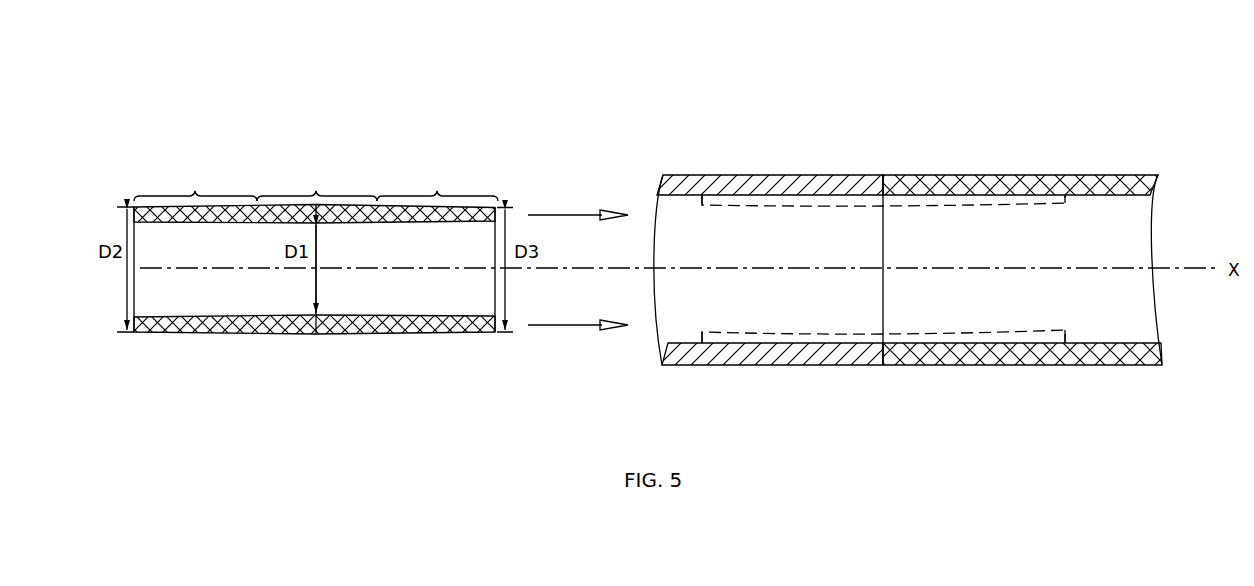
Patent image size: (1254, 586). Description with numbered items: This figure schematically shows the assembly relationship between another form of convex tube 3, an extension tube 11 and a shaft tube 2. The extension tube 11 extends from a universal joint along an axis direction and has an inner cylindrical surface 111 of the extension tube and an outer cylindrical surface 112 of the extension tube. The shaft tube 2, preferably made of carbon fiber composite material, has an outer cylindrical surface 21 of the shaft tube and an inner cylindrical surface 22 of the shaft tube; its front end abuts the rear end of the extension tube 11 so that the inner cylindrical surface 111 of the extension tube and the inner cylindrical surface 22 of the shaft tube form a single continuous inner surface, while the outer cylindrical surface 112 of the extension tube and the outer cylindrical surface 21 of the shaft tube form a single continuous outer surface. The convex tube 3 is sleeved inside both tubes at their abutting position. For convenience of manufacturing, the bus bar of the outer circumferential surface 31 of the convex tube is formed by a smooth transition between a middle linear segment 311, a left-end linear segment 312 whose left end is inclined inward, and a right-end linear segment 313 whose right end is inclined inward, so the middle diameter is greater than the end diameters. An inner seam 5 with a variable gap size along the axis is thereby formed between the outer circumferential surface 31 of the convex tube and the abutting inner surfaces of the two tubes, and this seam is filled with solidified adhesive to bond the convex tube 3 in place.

The shaft tube 2 is at (1024, 175).
The outer cylindrical surface of the shaft tube 21 is at (1112, 174).
The inner cylindrical surface of the shaft tube 22 is at (1140, 200).
The extension tube 11 is at (801, 182).
The inner cylindrical surface of the extension tube 111 is at (676, 200).
The outer cylindrical surface of the extension tube 112 is at (703, 174).
The convex tube 3 is at (185, 334).
The outer circumferential surface of the convex tube 31 is at (257, 336).
The middle linear segment 311 is at (317, 180).
The left-end linear segment 312 is at (195, 182).
The right-end linear segment 313 is at (437, 183).
The inner seam 5 is at (1013, 203).